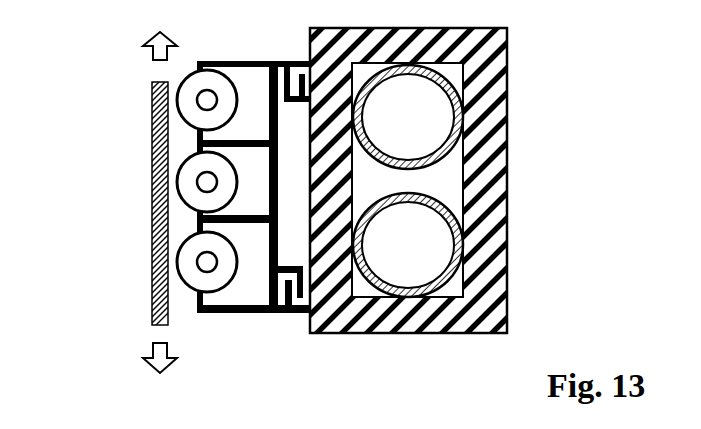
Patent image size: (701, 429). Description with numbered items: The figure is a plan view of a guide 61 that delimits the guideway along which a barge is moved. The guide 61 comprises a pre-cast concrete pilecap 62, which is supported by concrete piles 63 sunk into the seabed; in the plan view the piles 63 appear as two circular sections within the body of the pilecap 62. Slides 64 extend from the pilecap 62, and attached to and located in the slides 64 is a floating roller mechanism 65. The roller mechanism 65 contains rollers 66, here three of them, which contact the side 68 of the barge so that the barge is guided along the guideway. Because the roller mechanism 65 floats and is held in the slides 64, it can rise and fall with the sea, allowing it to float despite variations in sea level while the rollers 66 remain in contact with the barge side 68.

The guide 61 is at (268, 340).
The pre-cast concrete pilecap 62 is at (503, 103).
The concrete piles 63 is at (408, 181).
The slides 64 is at (286, 60).
The floating roller mechanism 65 is at (234, 183).
The rollers 66 is at (189, 121).
The side of a barge 68 is at (152, 126).